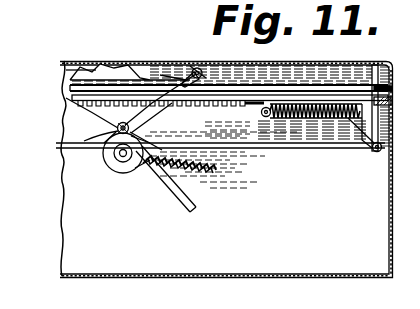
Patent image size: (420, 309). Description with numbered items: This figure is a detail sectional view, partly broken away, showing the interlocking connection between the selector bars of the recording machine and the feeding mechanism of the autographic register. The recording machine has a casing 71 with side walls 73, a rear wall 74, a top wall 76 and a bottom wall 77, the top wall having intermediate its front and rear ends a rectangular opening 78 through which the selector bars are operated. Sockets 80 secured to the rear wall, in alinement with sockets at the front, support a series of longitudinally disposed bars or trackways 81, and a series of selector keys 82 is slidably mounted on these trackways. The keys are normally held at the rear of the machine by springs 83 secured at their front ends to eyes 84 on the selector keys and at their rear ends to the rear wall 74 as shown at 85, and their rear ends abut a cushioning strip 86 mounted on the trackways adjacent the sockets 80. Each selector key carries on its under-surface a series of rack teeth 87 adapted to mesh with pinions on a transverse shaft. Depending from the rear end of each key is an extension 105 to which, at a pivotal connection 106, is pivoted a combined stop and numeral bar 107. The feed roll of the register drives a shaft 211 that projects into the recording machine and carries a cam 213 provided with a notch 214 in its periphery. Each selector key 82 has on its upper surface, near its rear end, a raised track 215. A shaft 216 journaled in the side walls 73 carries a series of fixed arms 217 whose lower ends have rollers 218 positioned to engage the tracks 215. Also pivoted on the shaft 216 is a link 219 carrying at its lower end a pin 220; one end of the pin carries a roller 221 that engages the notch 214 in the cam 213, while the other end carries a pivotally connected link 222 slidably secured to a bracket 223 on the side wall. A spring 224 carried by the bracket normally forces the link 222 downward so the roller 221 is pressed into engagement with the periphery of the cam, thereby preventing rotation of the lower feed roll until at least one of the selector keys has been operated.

The casing 71 is at (300, 277).
The side walls 73 is at (247, 274).
The rear wall 74 is at (391, 212).
The top wall 76 is at (284, 64).
The bottom wall 77 is at (344, 277).
The rectangular opening 78 is at (70, 63).
The sockets 80 is at (386, 85).
The trackways 81 is at (215, 156).
The selector keys 82 is at (66, 70).
The springs 83 is at (300, 120).
The eyes 84 is at (270, 116).
The spring securing point 85 is at (380, 155).
The cushioning strip 86 is at (376, 86).
The rack teeth 87 is at (208, 101).
The extension 105 is at (368, 136).
The pivotal connection 106 is at (384, 152).
The combined stop and numeral bar 107 is at (240, 148).
The shaft 211 is at (110, 158).
The cam 213 is at (122, 166).
The notch 214 is at (56, 145).
The raised track 215 is at (222, 82).
The shaft 216 is at (199, 68).
The arms 217 is at (192, 70).
The rollers 218 is at (188, 80).
The link 219 is at (120, 124).
The pin 220 is at (62, 110).
The roller 221 is at (118, 131).
The link 222 is at (150, 168).
The bracket 223 is at (160, 183).
The spring 224 is at (172, 208).